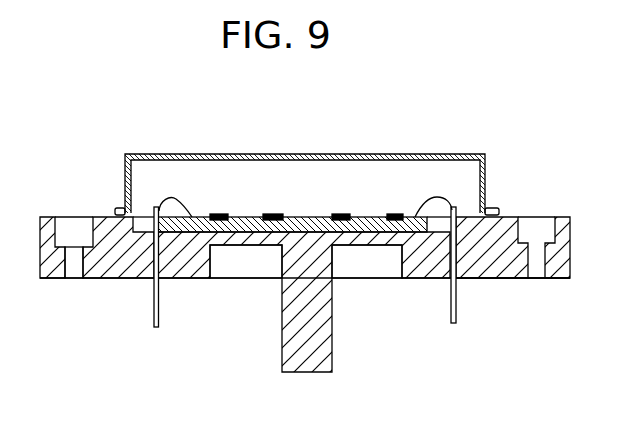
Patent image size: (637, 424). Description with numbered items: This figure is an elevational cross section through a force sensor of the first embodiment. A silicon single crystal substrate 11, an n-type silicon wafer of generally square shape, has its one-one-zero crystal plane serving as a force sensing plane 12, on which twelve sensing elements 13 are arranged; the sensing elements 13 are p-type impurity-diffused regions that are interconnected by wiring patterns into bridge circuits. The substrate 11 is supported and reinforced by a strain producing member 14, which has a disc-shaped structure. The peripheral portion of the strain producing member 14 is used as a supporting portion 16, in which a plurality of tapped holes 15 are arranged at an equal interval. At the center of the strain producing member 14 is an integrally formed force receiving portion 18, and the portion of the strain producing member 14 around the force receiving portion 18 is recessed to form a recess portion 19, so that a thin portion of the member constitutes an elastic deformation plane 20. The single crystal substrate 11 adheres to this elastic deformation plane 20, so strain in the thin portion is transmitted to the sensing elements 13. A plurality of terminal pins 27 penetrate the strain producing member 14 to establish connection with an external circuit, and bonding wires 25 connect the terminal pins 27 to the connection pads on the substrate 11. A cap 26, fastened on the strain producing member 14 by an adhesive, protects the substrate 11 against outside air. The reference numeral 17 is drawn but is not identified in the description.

The silicon single crystal substrate 11 is at (302, 217).
The force sensing plane 12 is at (247, 217).
The sensing elements 13 is at (222, 217).
The strain producing member 14 is at (181, 268).
The tapped holes 15 is at (75, 250).
The supporting portion 16 is at (52, 217).
The pedestal 17 is at (305, 258).
The force receiving portion 18 is at (323, 328).
The recess portion 19 is at (240, 262).
The elastic deformation plane 20 is at (380, 240).
The bonding wires 25 is at (435, 197).
The cap 26 is at (370, 155).
The terminal pins 27 is at (457, 298).